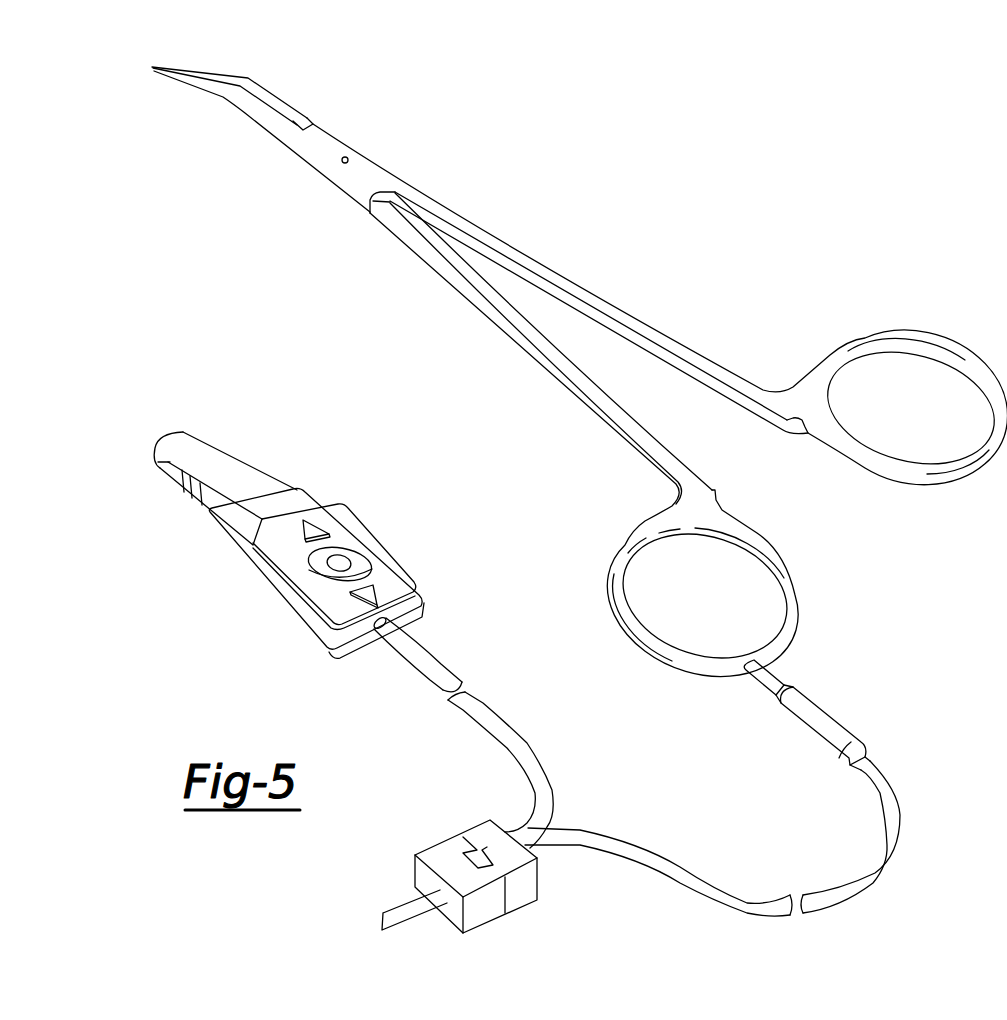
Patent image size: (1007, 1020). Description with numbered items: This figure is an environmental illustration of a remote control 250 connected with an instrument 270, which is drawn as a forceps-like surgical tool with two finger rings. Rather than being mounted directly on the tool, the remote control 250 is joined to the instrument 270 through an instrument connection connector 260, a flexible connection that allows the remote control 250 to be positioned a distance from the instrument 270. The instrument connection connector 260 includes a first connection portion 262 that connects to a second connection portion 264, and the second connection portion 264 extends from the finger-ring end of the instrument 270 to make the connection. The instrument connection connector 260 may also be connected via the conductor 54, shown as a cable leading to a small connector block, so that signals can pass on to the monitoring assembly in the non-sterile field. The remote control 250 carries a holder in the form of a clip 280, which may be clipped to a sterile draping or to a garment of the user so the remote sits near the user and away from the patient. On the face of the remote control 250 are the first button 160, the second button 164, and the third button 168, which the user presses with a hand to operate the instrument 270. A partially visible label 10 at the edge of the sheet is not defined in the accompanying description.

The surgical system 10 is at (997, 96).
The instrument 270 is at (700, 248).
The second connection portion 264 is at (777, 677).
The first connection portion 262 is at (838, 737).
The instrument connection connector 260 is at (771, 908).
The conductor 54 is at (403, 913).
The remote control 250 is at (243, 608).
The clip 280 is at (198, 458).
The first button 160 is at (320, 530).
The third button 168 is at (360, 561).
The second button 164 is at (375, 591).